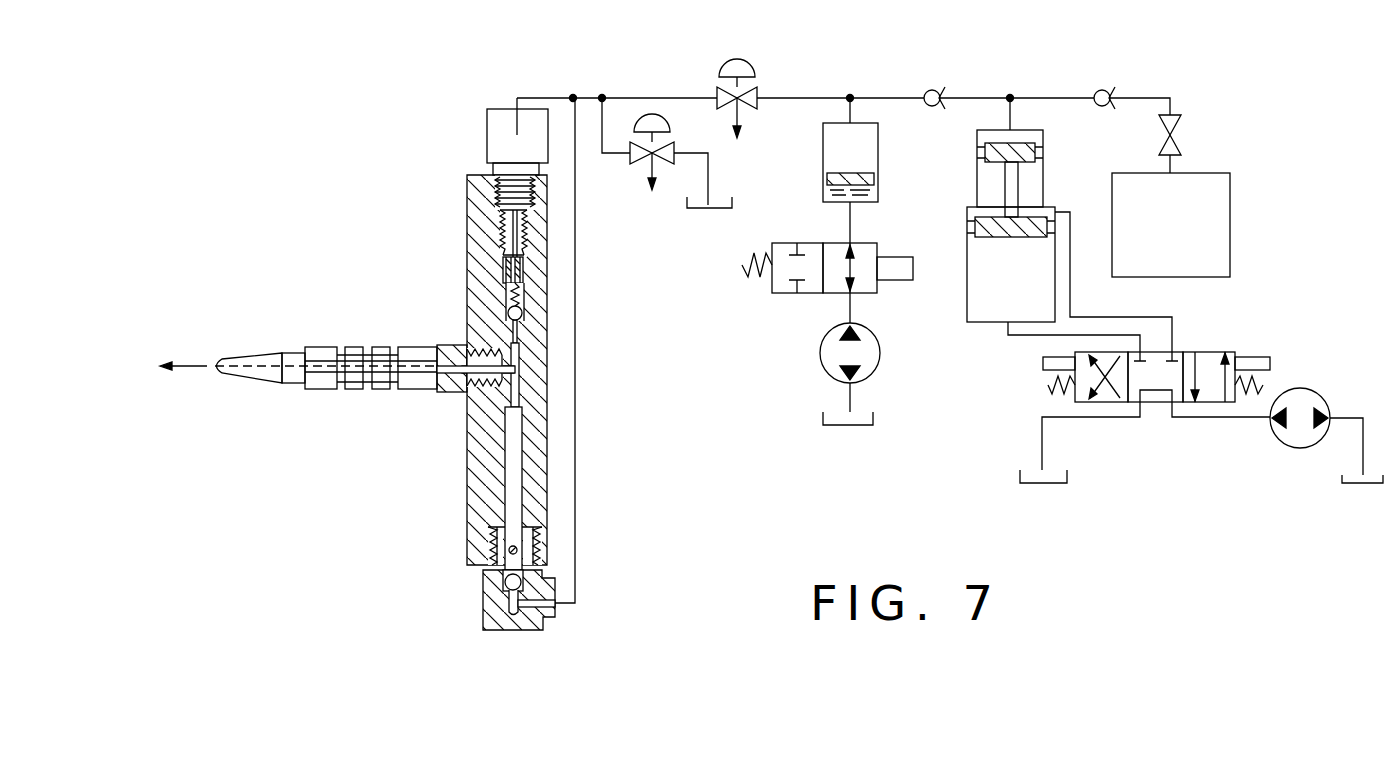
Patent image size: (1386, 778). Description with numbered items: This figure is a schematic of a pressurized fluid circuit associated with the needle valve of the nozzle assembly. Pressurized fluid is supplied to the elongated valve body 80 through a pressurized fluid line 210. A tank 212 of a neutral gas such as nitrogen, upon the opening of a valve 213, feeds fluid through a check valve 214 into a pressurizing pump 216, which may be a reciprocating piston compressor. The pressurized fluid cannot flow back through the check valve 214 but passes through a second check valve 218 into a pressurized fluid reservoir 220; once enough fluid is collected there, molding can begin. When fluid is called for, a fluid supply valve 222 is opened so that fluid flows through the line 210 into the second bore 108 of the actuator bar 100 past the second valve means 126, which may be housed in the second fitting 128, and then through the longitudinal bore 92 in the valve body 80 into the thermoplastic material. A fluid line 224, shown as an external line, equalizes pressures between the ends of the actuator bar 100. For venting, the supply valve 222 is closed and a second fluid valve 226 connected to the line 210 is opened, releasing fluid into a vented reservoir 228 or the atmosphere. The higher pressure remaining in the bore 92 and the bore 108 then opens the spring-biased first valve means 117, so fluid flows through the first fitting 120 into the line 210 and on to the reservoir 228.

The valve body 80 is at (306, 340).
The longitudinal bore 92 is at (455, 356).
The actuator bar 100 is at (456, 462).
The second bore 108 is at (493, 398).
The first valve means 117 is at (493, 304).
The first connector element or fitting 120 is at (497, 143).
The second valve means 126 is at (477, 582).
The second connector element or fitting 128 is at (498, 632).
The pressurized fluid line 210 is at (966, 97).
The tank 212 is at (1230, 226).
The valve 213 is at (1181, 125).
The check valve 214 is at (1105, 91).
The pressurizing pump 216 is at (967, 257).
The second check valve 218 is at (929, 90).
The pressurized fluid reservoir 220 is at (823, 160).
The fluid supply valve 222 is at (752, 90).
The fluid line 224 is at (577, 371).
The second fluid valve 226 is at (647, 163).
The vented reservoir 228 is at (700, 210).